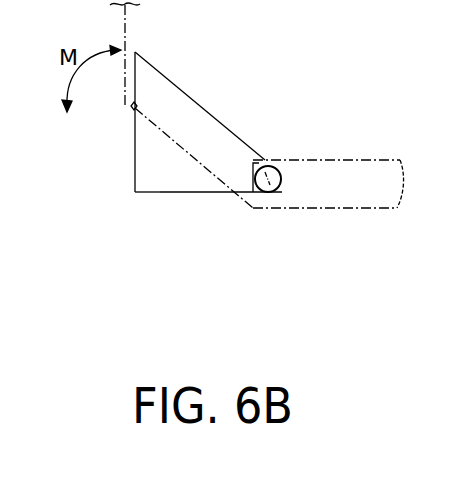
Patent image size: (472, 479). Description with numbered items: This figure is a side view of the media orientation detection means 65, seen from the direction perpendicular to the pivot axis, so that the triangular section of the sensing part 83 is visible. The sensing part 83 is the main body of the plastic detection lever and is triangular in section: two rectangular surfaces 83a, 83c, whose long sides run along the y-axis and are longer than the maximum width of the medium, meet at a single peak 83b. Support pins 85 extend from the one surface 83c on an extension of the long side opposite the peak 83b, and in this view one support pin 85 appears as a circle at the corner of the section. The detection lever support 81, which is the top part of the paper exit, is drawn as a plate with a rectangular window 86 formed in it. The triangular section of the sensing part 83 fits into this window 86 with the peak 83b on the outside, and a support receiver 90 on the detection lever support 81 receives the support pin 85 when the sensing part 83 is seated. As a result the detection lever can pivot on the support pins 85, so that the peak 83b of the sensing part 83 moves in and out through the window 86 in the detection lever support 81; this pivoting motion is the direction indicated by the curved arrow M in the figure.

The media orientation detection means 65 is at (247, 56).
The sensing part 83 is at (166, 187).
The rectangular surface 83a is at (135, 163).
The peak 83b is at (133, 193).
The rectangular surface 83c is at (221, 234).
The support pin 85 is at (270, 192).
The window 86 is at (232, 193).
The support receiver 90 is at (328, 202).
The detection lever support 81 is at (345, 211).